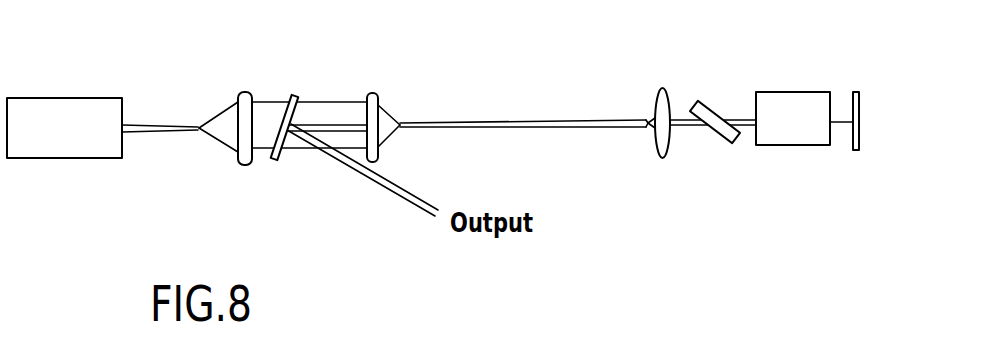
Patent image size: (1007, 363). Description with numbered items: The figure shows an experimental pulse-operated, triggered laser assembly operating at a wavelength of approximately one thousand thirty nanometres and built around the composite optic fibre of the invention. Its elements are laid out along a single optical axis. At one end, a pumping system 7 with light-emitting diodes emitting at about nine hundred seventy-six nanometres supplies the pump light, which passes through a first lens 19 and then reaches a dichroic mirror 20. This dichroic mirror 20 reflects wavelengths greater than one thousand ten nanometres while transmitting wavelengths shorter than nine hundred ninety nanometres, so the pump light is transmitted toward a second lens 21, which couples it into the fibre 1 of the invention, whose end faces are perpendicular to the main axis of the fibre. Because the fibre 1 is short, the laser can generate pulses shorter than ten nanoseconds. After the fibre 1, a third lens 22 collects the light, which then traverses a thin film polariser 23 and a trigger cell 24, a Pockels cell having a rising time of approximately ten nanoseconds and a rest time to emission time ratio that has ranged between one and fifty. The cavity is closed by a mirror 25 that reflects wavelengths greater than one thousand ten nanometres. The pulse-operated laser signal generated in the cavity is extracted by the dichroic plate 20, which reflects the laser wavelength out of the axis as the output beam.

The fibre 1 is at (524, 108).
The pumping system 7 is at (57, 108).
The first lens 19 is at (235, 158).
The dichroic mirror 20 is at (283, 156).
The second lens 21 is at (378, 92).
The third lens 22 is at (668, 88).
The thin film polariser 23 is at (720, 144).
The trigger cell 24 is at (787, 110).
The mirror 25 is at (850, 147).